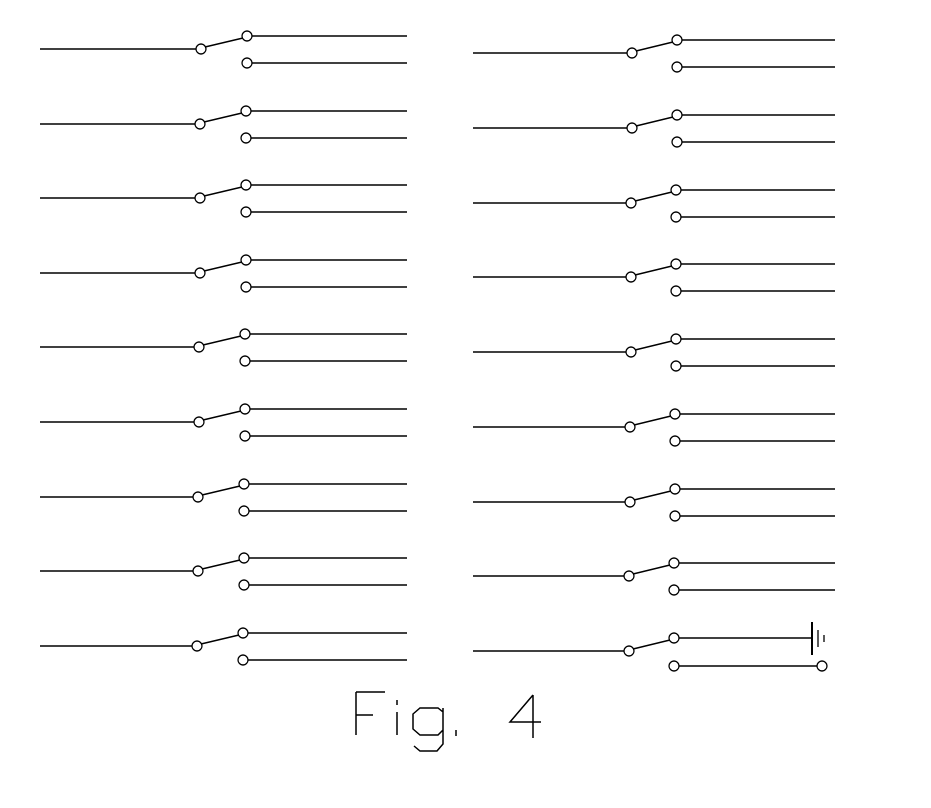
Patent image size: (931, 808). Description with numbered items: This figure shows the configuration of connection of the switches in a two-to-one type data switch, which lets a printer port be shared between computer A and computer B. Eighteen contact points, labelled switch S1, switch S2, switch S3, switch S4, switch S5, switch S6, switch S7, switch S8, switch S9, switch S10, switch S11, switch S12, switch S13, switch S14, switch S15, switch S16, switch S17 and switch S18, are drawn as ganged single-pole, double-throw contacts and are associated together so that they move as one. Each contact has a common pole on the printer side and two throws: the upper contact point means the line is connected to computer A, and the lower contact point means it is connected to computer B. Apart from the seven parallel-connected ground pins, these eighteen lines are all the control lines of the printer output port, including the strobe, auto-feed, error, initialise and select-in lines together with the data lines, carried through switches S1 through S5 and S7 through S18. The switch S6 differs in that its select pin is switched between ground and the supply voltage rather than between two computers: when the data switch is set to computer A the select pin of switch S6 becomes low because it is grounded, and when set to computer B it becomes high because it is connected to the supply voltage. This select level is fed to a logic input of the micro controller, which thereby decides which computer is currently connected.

The switch contact point S1 is at (654, 190).
The switch contact point S2 is at (654, 264).
The switch contact point S3 is at (654, 339).
The switch contact point S4 is at (654, 414).
The switch contact point S5 is at (654, 489).
The switch contact point S6 is at (651, 658).
The switch contact point S7 is at (654, 115).
The switch contact point S8 is at (654, 40).
The switch contact point S9 is at (223, 185).
The switch contact point S10 is at (223, 260).
The switch contact point S11 is at (223, 334).
The switch contact point S12 is at (223, 409).
The switch contact point S13 is at (223, 484).
The switch contact point S14 is at (223, 633).
The switch contact point S15 is at (223, 111).
The switch contact point S16 is at (223, 36).
The switch contact point S17 is at (223, 558).
The switch contact point S18 is at (654, 563).